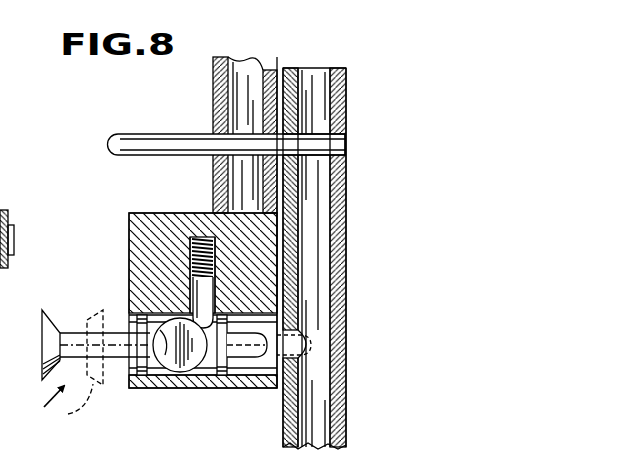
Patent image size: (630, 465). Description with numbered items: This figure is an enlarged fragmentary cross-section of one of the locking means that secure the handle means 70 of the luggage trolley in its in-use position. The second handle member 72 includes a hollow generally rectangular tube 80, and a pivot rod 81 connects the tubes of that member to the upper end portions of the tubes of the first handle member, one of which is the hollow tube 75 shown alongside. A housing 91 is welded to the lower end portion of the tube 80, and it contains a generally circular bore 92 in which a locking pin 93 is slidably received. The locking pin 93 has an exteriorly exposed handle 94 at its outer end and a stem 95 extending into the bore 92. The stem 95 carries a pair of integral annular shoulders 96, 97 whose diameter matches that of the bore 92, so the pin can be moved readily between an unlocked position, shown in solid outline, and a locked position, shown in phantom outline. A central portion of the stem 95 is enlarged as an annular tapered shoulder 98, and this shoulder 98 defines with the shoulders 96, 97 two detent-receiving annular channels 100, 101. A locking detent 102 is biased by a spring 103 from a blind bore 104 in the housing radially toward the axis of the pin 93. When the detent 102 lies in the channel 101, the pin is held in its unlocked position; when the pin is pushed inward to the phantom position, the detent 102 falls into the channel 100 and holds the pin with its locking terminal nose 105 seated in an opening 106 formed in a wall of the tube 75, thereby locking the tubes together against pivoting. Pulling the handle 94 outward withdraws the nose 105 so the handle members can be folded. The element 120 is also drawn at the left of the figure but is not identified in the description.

The handle means 70 is at (348, 258).
The second handle member 72 is at (227, 51).
The hollow tube 75 is at (347, 226).
The hollow tube 80 is at (206, 86).
The pivot rod 81 is at (312, 140).
The housing 91 is at (212, 252).
The bore 92 is at (138, 272).
The locking pin 93 is at (39, 405).
The handle 94 is at (41, 325).
The stem 95 is at (83, 320).
The annular shoulder 96 is at (115, 322).
The annular shoulder 97 is at (215, 378).
The tapered shoulder 98 is at (180, 378).
The detent-receiving annular channel 100 is at (157, 378).
The detent-receiving annular channel 101 is at (203, 380).
The locking detent 102 is at (137, 243).
The spring 103 is at (190, 251).
The blind bore 104 is at (203, 236).
The locking terminal nose 105 is at (262, 370).
The opening 106 is at (300, 330).
The bracket 120 is at (15, 218).